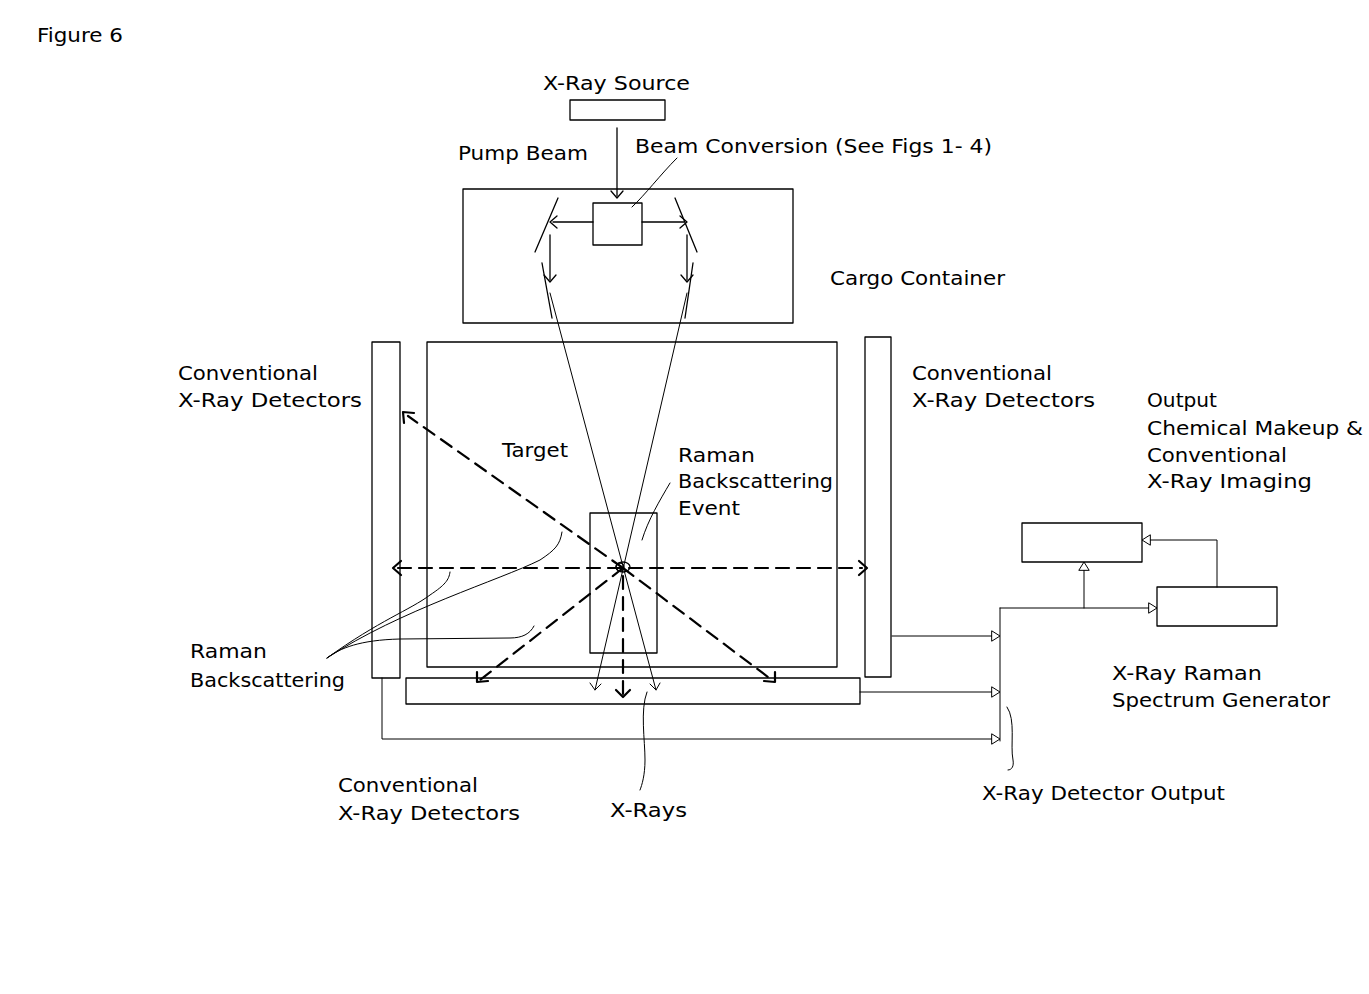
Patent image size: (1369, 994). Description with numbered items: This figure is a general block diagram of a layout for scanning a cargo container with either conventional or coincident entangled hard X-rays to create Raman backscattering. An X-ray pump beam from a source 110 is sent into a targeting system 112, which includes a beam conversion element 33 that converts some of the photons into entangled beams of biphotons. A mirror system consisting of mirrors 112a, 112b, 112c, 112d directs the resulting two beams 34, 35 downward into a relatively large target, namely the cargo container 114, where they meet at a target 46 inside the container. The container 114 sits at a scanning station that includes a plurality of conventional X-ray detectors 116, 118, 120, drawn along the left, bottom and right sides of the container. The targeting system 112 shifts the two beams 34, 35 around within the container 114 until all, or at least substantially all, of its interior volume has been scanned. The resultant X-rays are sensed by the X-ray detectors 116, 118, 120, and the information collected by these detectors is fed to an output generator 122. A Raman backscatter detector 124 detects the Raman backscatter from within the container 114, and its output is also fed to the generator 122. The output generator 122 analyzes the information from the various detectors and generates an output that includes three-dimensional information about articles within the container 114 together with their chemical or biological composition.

The source 110 is at (617, 111).
The beam conversion element 33 is at (617, 224).
The targeting system 112 is at (570, 256).
The mirror 112a is at (523, 225).
The mirror 112b is at (713, 225).
The mirror 112c is at (522, 290).
The mirror 112d is at (716, 290).
The pump beam 34 is at (601, 491).
The pump beam 35 is at (642, 491).
The cargo container 114 is at (825, 290).
The conventional X-ray detector 116 is at (267, 410).
The conventional X-ray detector 118 is at (490, 790).
The conventional X-ray detector 120 is at (990, 415).
The target 46 is at (598, 525).
The output generator 122 is at (1133, 448).
The Raman backscatter detector 124 is at (1170, 655).